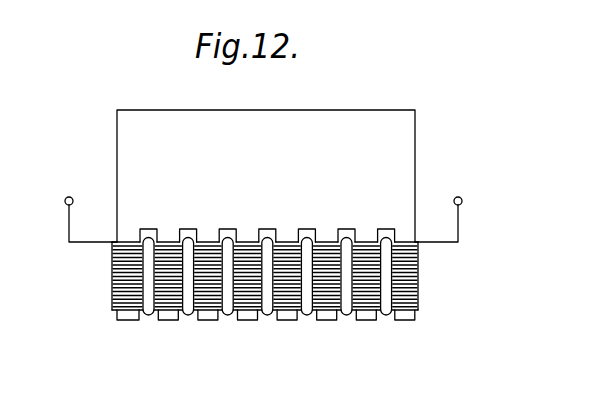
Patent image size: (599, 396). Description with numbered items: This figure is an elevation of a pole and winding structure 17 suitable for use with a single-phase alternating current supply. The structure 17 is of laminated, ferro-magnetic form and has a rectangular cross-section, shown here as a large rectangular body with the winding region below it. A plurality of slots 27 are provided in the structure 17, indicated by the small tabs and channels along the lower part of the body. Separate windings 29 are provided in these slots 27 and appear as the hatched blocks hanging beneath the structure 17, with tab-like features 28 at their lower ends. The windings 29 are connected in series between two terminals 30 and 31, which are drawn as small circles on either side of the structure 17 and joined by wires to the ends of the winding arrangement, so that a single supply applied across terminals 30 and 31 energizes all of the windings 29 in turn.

The structure 17 is at (415, 145).
The slots 27 is at (380, 229).
The terminal lugs 28 is at (365, 320).
The windings 29 is at (128, 300).
The terminal 30 is at (69, 196).
The terminal 31 is at (462, 200).